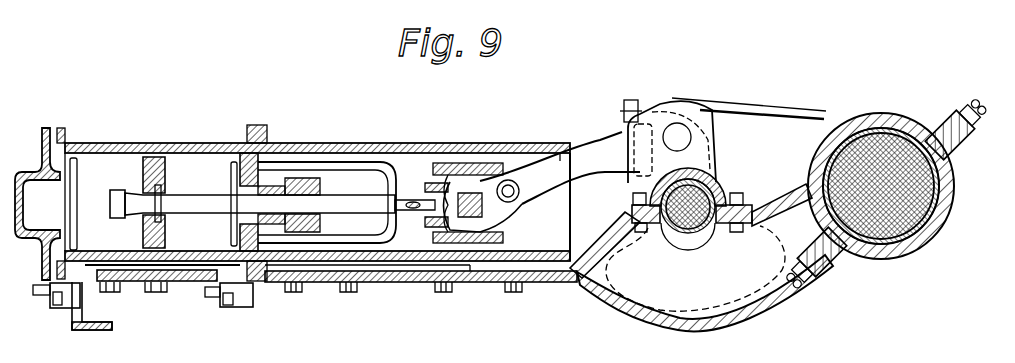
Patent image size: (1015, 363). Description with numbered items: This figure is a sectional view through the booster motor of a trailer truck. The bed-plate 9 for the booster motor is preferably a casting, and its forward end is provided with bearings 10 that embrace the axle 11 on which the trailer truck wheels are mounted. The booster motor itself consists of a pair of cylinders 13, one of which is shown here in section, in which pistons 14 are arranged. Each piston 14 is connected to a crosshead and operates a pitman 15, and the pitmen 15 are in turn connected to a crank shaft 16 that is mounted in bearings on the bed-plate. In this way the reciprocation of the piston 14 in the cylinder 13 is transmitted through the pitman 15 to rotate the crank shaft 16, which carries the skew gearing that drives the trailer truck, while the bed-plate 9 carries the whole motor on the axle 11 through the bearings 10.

The bed-plate 9 is at (604, 292).
The bearings 10 is at (893, 118).
The axle 11 is at (935, 202).
The cylinders 13 is at (93, 168).
The pistons 14 is at (165, 172).
The pitmen 15 is at (593, 160).
The crank shaft 16 is at (700, 218).